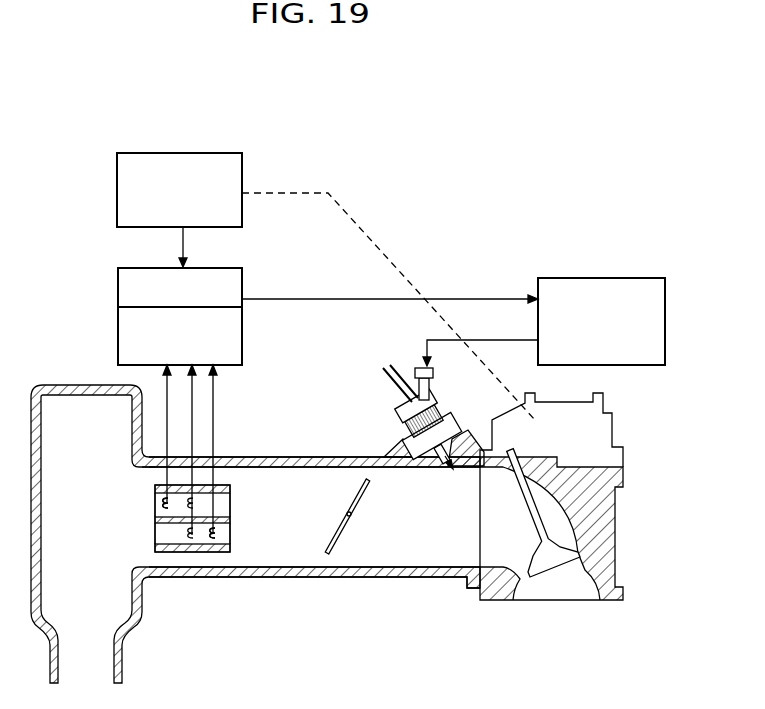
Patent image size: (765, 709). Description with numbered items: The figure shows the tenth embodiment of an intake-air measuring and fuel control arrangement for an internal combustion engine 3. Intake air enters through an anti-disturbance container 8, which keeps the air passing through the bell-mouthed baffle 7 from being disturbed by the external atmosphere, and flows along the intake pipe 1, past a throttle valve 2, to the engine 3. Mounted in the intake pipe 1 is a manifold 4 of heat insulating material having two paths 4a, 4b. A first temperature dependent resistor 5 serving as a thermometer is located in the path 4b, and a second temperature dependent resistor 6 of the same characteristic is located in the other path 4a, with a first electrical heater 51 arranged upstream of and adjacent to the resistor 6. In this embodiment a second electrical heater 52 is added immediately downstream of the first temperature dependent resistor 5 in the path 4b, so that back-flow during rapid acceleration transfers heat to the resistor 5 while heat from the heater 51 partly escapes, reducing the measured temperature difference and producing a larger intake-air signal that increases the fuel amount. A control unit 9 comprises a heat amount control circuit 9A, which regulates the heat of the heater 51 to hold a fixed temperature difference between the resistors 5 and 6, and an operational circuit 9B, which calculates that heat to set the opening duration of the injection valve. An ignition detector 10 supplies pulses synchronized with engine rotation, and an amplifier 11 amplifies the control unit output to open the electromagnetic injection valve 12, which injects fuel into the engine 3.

The intake pipe 1 is at (437, 560).
The throttle valve 2 is at (340, 541).
The internal combustion engine 3 is at (597, 520).
The manifold 4 is at (191, 545).
The path 4a is at (228, 507).
The path 4b is at (167, 552).
The first temperature dependent resistor 5 is at (202, 552).
The second temperature dependent resistor 6 is at (195, 502).
The baffle 7 is at (147, 480).
The anti-disturbance container 8 is at (57, 410).
The control unit 9 is at (187, 312).
The heat amount control circuit 9A is at (242, 328).
The operational circuit 9B is at (242, 288).
The ignition detector 10 is at (176, 152).
The amplifier 11 is at (593, 278).
The electromagnetic injection valve 12 is at (432, 388).
The first electrical heater 51 is at (160, 505).
The second electrical heater 52 is at (218, 537).